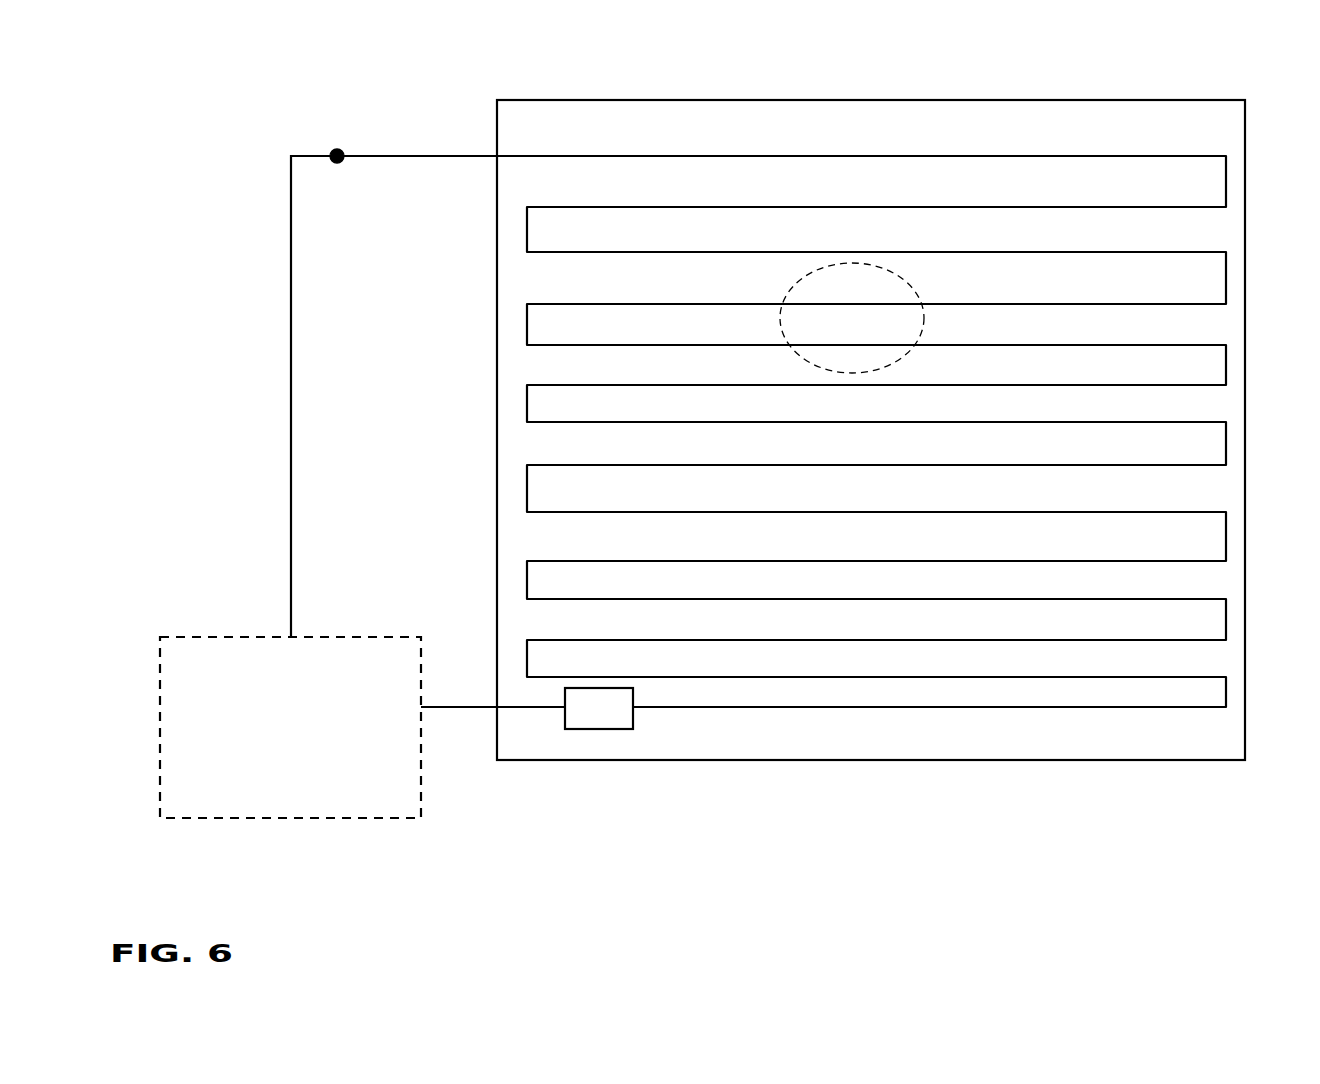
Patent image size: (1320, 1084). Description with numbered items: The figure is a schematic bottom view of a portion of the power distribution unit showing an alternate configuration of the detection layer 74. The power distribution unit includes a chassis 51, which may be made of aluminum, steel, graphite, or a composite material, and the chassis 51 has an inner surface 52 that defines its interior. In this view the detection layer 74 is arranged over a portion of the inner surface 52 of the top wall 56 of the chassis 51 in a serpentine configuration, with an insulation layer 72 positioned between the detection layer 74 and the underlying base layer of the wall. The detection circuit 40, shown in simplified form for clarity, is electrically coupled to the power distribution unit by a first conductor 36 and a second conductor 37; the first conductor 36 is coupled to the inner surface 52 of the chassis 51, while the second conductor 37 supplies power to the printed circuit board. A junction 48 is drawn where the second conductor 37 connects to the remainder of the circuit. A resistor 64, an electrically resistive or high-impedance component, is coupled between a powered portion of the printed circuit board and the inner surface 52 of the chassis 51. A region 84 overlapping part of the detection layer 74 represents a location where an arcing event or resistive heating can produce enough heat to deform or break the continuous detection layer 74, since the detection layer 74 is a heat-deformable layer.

The first conductor 36 is at (463, 703).
The second conductor 37 is at (430, 155).
The detection circuit 40 is at (234, 637).
The connection node 48 is at (335, 150).
The chassis 51 is at (1008, 100).
The inner surface 52 is at (1128, 120).
The top wall 56 is at (752, 127).
The resistor 64 is at (596, 715).
The insulation layer 72 is at (838, 120).
The detection layer 74 is at (1226, 282).
The region 84 is at (915, 292).